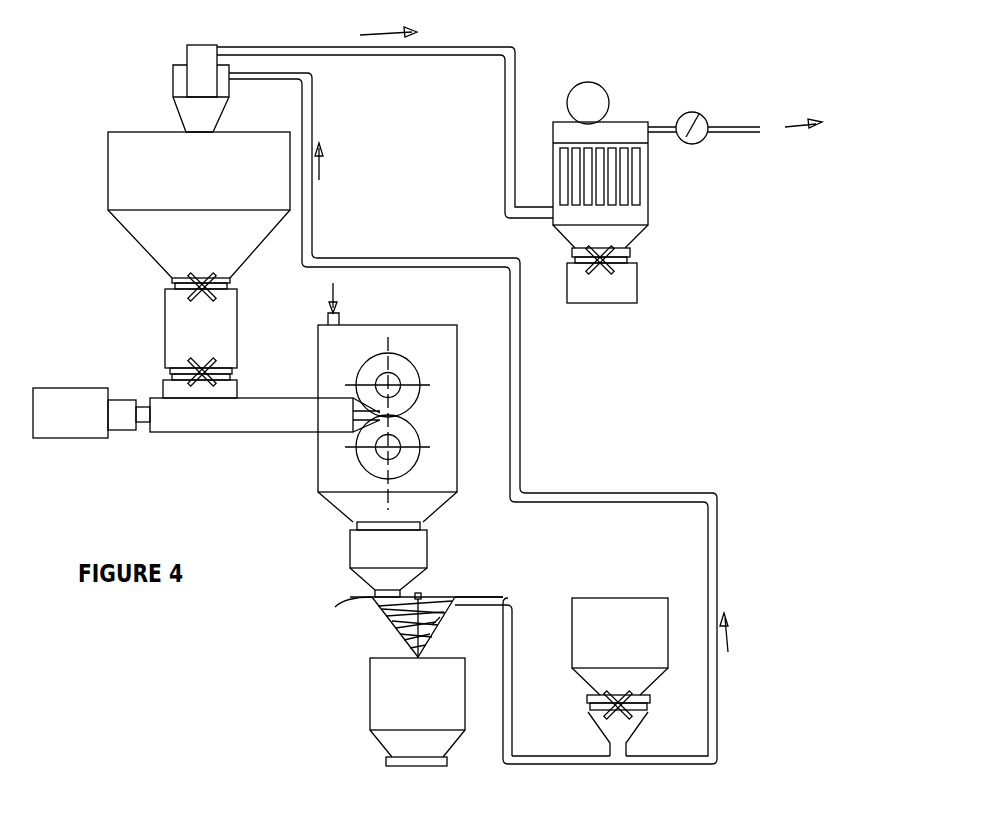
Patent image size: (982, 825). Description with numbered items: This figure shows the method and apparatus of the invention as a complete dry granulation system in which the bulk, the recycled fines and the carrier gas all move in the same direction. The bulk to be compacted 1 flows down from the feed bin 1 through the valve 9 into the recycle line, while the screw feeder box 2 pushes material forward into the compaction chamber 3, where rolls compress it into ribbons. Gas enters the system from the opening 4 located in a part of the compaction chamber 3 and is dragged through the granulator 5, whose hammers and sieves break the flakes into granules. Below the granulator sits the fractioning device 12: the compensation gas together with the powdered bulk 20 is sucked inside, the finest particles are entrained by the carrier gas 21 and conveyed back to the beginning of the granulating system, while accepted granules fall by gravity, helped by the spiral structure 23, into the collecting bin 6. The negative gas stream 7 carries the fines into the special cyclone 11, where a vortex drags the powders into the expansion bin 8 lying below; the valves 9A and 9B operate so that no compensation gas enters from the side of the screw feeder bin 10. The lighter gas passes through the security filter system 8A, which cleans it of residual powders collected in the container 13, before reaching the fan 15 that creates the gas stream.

The feed bin 1 is at (628, 652).
The screw feeder box 2 is at (202, 430).
The compaction chamber 3 is at (348, 366).
The opening 4 is at (345, 308).
The granulator 5 is at (417, 567).
The bin 6 is at (424, 708).
The negative gas stream 7 is at (792, 129).
The expansion bin 8 is at (220, 194).
The filter system 8A is at (600, 178).
The valve 9 is at (618, 723).
The valve 9A is at (175, 282).
The valve 9B is at (170, 374).
The screw feeder bin 10 is at (209, 347).
The cyclone 11 is at (201, 88).
The fractioning device 12 is at (426, 625).
The container 13 is at (602, 285).
The fan 15 is at (697, 112).
The powdered bulk 20 is at (336, 609).
The carrier gas 21 is at (470, 598).
The spiral structure 23 is at (437, 619).